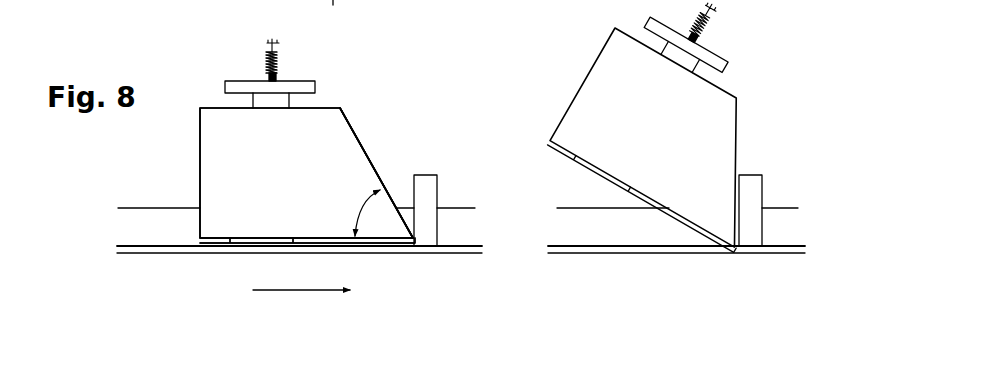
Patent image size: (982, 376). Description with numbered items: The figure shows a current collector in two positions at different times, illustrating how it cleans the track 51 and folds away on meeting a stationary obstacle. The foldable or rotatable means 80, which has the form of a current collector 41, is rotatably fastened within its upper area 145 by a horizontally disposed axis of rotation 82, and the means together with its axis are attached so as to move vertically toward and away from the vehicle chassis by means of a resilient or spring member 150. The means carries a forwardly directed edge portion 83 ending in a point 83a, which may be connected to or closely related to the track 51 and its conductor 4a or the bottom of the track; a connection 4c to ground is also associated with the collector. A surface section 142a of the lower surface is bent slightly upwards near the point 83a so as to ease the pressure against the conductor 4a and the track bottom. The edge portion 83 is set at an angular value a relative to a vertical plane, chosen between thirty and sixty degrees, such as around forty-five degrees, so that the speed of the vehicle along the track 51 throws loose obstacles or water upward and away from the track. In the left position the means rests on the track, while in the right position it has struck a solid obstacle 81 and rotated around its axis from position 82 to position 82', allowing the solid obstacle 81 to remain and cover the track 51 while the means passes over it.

The foldable or rotatable means 80 is at (184, 136).
The upper area 145 is at (329, 108).
The current collector 41 is at (343, 162).
The edge portion 83 is at (378, 168).
The surface section 142a is at (370, 240).
The point 83a is at (390, 232).
The axis of rotation 82 is at (291, 68).
The axis of rotation position 82' is at (705, 43).
The resilient or spring member 150 is at (265, 63).
The solid obstacle 81 is at (428, 174).
The track 51 is at (453, 225).
The connection to ground 4c is at (167, 208).
The conductor 4a is at (190, 254).
The angular value a is at (362, 218).